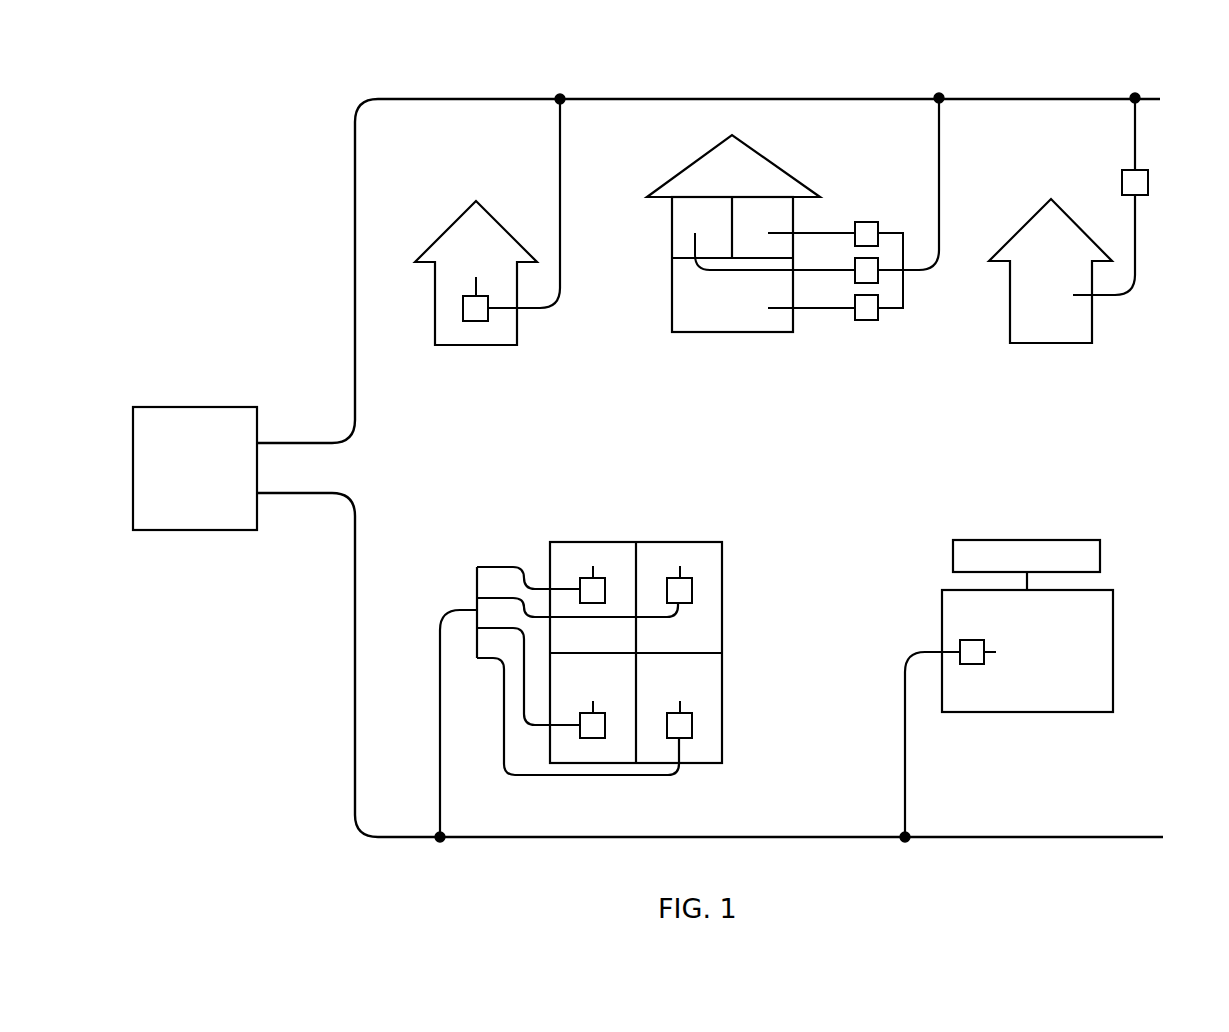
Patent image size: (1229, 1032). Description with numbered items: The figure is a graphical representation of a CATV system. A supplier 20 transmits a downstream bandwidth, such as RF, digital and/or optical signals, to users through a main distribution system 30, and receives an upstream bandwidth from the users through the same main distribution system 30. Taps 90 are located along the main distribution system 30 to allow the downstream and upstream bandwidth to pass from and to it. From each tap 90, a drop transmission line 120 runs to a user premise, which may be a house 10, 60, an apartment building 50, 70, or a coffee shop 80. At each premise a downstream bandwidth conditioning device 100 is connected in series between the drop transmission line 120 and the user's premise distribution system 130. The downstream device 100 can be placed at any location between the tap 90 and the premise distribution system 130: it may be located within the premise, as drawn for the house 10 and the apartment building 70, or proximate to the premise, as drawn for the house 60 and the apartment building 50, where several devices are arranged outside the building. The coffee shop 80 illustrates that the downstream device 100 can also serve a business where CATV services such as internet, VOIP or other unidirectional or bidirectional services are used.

The house 10 is at (487, 358).
The supplier 20 is at (182, 418).
The main distribution system 30 is at (676, 98).
The apartment building 50 is at (747, 348).
The house 60 is at (1050, 353).
The apartment building 70 is at (672, 520).
The coffee shop 80 is at (1130, 562).
The tap 90 is at (561, 96).
The downstream bandwidth conditioning device 100 is at (478, 321).
The drop transmission line 120 is at (560, 165).
The premise distribution system 130 is at (473, 283).